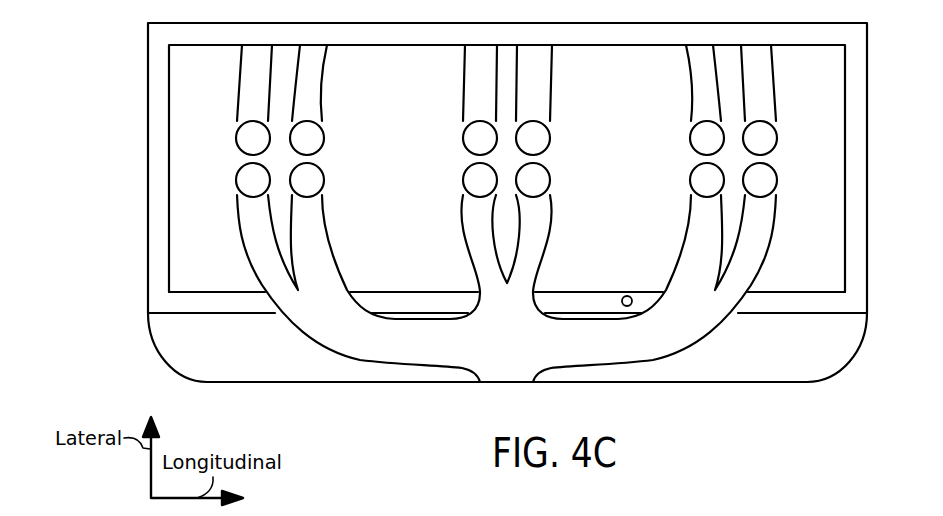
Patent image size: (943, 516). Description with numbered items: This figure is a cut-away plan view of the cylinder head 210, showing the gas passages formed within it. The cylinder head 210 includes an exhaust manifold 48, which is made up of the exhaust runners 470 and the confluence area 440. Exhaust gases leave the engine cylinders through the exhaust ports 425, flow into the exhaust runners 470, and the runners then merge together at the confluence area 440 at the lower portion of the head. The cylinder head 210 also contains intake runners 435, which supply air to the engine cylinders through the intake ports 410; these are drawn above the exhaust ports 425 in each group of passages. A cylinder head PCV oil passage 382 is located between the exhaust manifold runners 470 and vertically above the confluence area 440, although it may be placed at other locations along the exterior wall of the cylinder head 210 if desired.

The cylinder head 210 is at (183, 377).
The intake runners 435 is at (297, 63).
The intake ports 410 is at (300, 124).
The exhaust ports 425 is at (272, 171).
The exhaust runners 470 is at (283, 208).
The exhaust manifold 48 is at (332, 270).
The confluence area 440 is at (506, 288).
The cylinder head PCV oil passage 382 is at (624, 296).